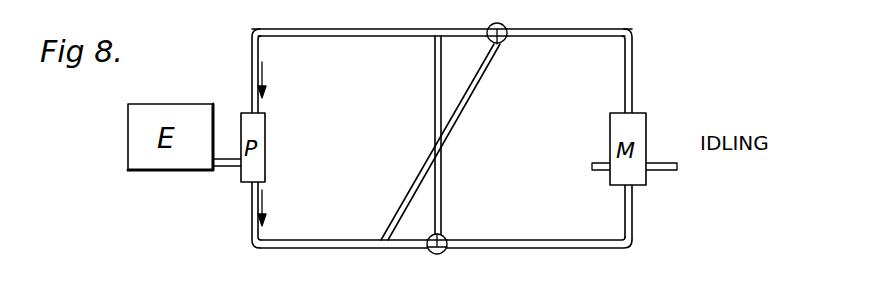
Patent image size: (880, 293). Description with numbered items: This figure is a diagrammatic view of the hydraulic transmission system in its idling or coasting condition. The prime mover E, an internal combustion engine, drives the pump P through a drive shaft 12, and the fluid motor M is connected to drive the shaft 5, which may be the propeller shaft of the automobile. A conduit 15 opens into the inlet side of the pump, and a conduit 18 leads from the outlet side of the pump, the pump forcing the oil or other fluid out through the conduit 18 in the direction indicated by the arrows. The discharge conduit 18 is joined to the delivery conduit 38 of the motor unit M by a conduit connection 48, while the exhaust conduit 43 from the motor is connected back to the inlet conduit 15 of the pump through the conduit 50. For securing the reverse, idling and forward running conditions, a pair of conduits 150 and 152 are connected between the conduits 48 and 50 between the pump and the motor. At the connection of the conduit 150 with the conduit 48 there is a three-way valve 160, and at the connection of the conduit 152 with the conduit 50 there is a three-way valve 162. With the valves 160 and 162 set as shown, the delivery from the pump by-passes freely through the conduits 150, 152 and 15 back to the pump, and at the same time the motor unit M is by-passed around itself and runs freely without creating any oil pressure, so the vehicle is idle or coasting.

The shaft 5 is at (664, 163).
The engine drive shaft 12 is at (230, 163).
The conduit 15 is at (252, 73).
The conduit 18 is at (252, 226).
The conduit 38 is at (632, 225).
The conduit 43 is at (632, 80).
The conduit connection 48 is at (535, 248).
The conduit 50 is at (548, 29).
The conduit 150 is at (434, 81).
The conduit 152 is at (466, 106).
The 3-way valve 160 is at (430, 252).
The 3-way valve 162 is at (497, 23).